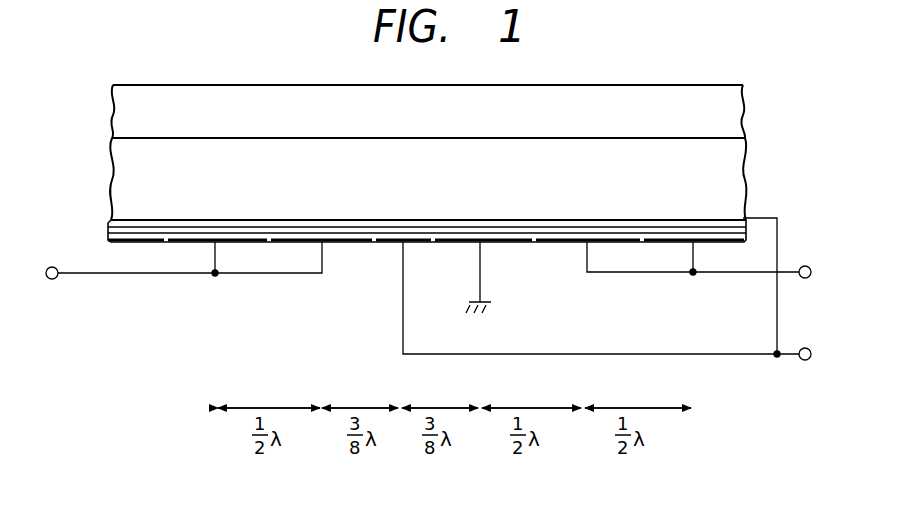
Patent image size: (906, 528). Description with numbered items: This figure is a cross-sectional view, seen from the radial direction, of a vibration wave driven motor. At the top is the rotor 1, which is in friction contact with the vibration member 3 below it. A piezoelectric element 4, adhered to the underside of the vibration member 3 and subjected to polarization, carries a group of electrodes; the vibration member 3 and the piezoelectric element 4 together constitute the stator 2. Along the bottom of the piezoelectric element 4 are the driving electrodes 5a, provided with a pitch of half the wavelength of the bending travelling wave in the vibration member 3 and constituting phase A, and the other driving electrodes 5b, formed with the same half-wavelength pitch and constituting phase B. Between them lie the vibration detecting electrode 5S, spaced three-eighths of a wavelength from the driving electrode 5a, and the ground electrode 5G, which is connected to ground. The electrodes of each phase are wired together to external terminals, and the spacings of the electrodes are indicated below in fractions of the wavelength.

The rotor 1 is at (733, 112).
The stator 2 is at (818, 152).
The vibration member 3 is at (727, 178).
The piezoelectric element 4 is at (545, 229).
The driving electrodes 5a is at (186, 247).
The vibration detecting electrode 5S is at (389, 247).
The ground electrode 5G is at (495, 248).
The driving electrodes 5b is at (605, 247).